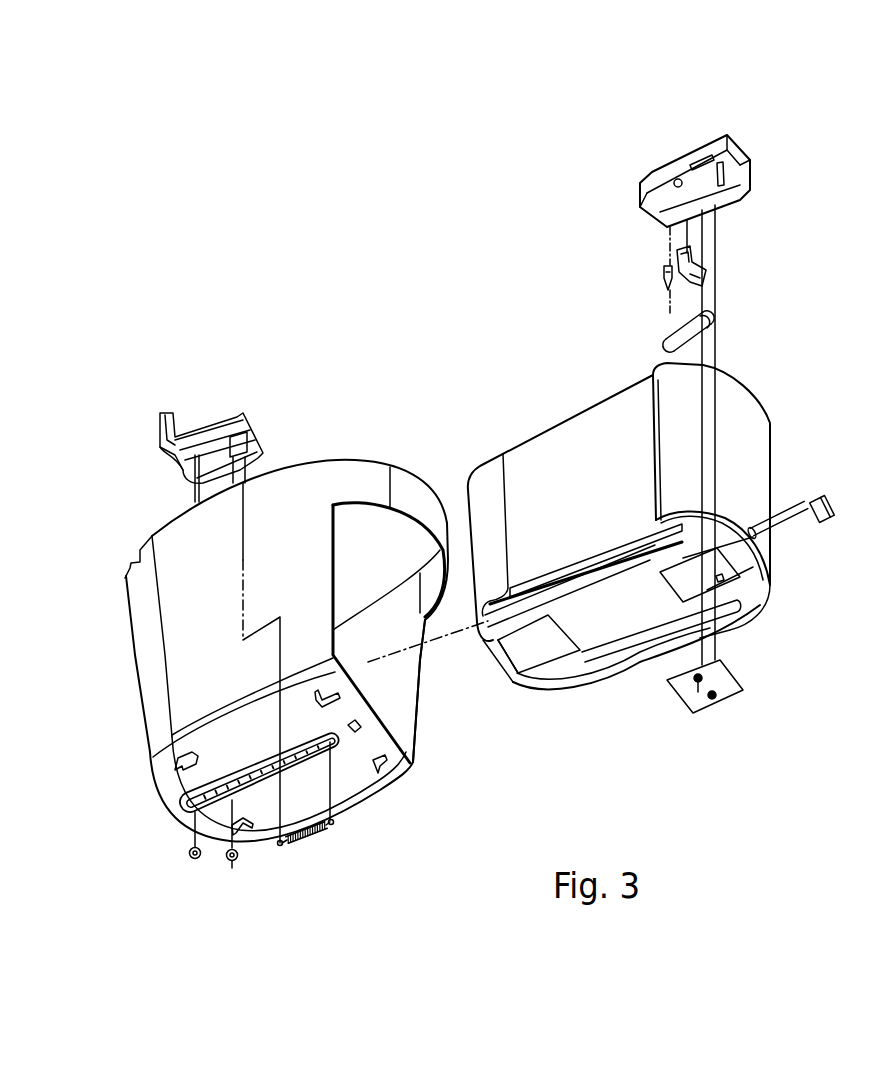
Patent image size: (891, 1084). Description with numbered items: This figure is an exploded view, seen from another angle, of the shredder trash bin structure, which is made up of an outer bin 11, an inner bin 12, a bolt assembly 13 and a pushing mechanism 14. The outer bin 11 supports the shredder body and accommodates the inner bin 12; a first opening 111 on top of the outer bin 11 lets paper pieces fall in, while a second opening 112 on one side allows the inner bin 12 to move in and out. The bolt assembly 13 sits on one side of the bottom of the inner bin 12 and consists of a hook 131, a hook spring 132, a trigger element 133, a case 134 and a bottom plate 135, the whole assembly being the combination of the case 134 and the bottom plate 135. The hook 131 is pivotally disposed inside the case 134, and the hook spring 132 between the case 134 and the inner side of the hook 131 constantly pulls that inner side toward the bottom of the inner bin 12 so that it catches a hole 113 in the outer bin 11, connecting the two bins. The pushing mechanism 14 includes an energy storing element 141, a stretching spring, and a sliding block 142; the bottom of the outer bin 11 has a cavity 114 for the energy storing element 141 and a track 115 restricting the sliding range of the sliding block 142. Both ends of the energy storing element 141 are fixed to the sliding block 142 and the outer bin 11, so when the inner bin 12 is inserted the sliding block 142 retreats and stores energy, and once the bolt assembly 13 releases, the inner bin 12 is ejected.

The outer bin 11 is at (173, 537).
The first opening 111 is at (367, 513).
The second opening 112 is at (403, 703).
The hole 113 is at (363, 733).
The cavity 114 is at (313, 760).
The track 115 is at (210, 805).
The inner bin 12 is at (525, 438).
The bolt assembly 13 is at (703, 389).
The hook 131 is at (663, 333).
The hook spring 132 is at (663, 270).
The trigger element 133 is at (800, 503).
The case 134 is at (743, 160).
The bottom plate 135 is at (733, 683).
The pushing mechanism 14 is at (255, 607).
The energy storing element 141 is at (307, 840).
The sliding block 142 is at (208, 423).